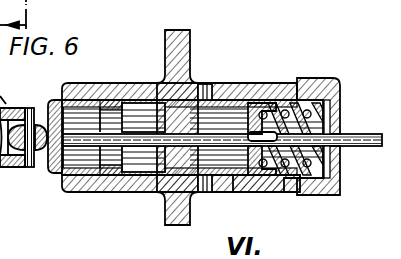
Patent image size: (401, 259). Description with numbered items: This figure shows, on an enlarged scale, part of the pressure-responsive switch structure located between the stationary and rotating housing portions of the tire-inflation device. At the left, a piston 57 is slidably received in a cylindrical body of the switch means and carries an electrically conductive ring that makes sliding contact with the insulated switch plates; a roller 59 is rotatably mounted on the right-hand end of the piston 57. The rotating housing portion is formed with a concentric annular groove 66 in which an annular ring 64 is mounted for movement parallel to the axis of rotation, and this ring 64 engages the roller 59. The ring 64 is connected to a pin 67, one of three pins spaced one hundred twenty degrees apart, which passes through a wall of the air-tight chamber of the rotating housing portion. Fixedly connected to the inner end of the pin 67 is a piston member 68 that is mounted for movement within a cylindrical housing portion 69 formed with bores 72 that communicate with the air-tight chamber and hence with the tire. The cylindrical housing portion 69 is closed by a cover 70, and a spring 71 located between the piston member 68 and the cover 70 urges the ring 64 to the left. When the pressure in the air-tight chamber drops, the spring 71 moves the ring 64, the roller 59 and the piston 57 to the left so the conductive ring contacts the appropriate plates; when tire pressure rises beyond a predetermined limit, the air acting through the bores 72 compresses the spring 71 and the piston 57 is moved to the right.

The piston 57 is at (0, 95).
The roller 59 is at (8, 165).
The annular ring 64 is at (54, 176).
The annular groove 66 is at (134, 110).
The pin 67 is at (352, 134).
The piston member 68 is at (263, 103).
The cylindrical housing portion 69 is at (266, 193).
The cover 70 is at (319, 80).
The spring 71 is at (331, 163).
The bore 72 is at (207, 85).